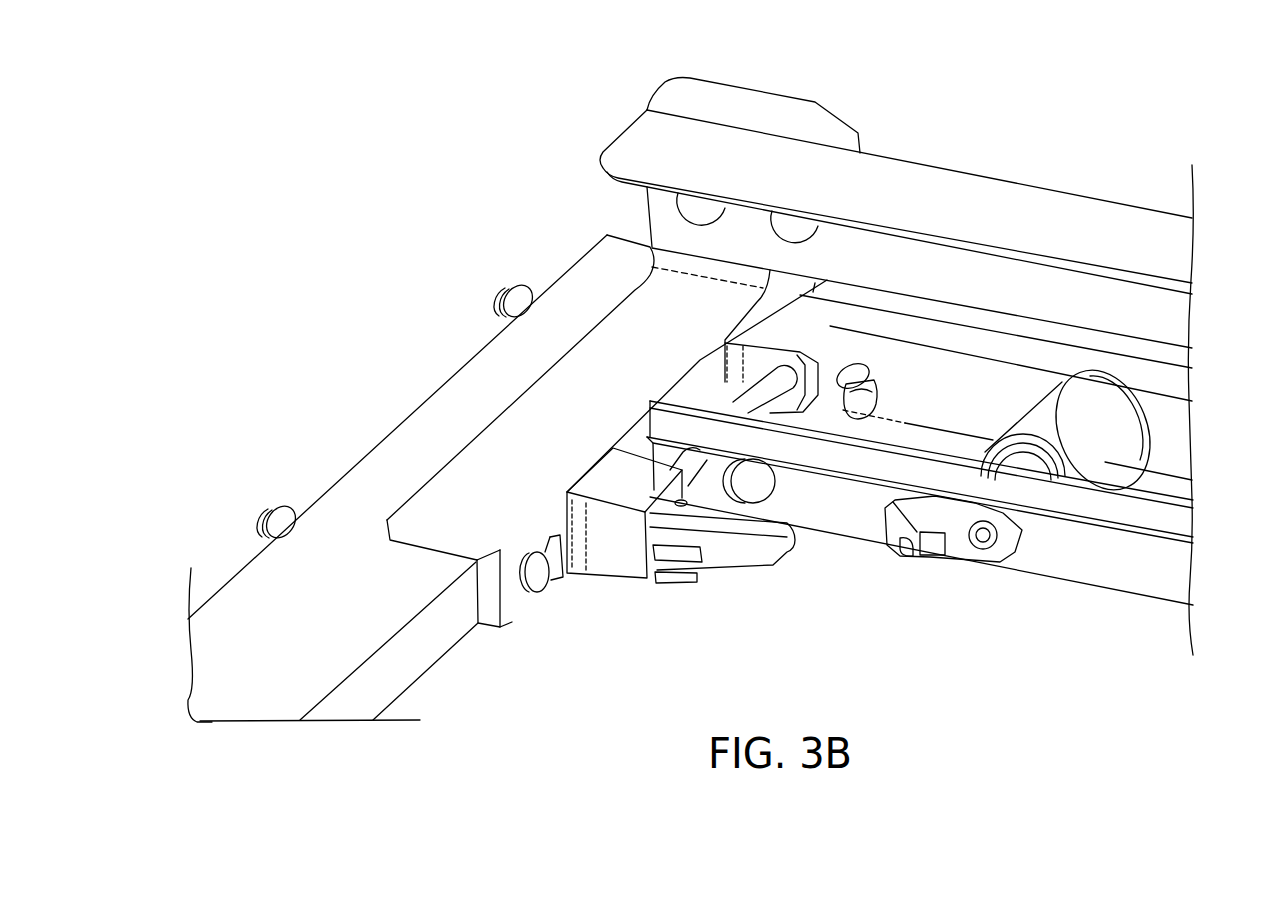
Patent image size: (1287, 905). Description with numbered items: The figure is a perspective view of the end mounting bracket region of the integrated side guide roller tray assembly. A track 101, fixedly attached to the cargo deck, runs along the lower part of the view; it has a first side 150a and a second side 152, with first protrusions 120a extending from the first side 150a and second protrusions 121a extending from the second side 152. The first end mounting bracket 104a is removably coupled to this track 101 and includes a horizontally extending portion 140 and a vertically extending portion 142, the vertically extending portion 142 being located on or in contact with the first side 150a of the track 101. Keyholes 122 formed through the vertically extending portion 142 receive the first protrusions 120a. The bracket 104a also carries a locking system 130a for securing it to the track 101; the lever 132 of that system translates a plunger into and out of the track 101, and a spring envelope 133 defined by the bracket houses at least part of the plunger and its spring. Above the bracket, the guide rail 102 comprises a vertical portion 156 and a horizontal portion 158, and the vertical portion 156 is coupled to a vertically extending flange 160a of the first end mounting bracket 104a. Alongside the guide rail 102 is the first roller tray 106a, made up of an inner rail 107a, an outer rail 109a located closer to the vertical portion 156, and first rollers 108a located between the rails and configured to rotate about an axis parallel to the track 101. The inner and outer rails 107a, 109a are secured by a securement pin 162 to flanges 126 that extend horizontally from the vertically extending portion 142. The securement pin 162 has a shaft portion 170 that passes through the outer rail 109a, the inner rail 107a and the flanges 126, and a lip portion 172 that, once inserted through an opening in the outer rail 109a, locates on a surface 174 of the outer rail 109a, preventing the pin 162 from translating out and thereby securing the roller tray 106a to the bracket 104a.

The track 101 is at (237, 675).
The guide rail 102 is at (1004, 183).
The first end mounting bracket 104a is at (510, 442).
The first roller tray 106a is at (1097, 567).
The inner rail 107a is at (1016, 558).
The first rollers 108a is at (1083, 430).
The outer rail 109a is at (1160, 373).
The first protrusion 120a is at (541, 589).
The second protrusion 121a is at (506, 294).
The keyhole 122 is at (572, 583).
The flange 126 is at (760, 338).
The locking system 130a is at (733, 600).
The lever 132 is at (752, 556).
The spring envelope 133 is at (642, 498).
The horizontally extending portion 140 is at (577, 431).
The vertically extending portion 142 is at (510, 628).
The first side of the first track 150a is at (422, 647).
The second side of the track 152 is at (255, 557).
The vertical portion of the guide rail 156 is at (1003, 294).
The horizontal portion of the guide rail 158 is at (1058, 233).
The vertically extending flange 160a is at (785, 97).
The securement pin 162 is at (718, 389).
The shaft portion 170 is at (757, 400).
The lip portion 172 is at (880, 387).
The surface of the outer rail 174 is at (992, 406).